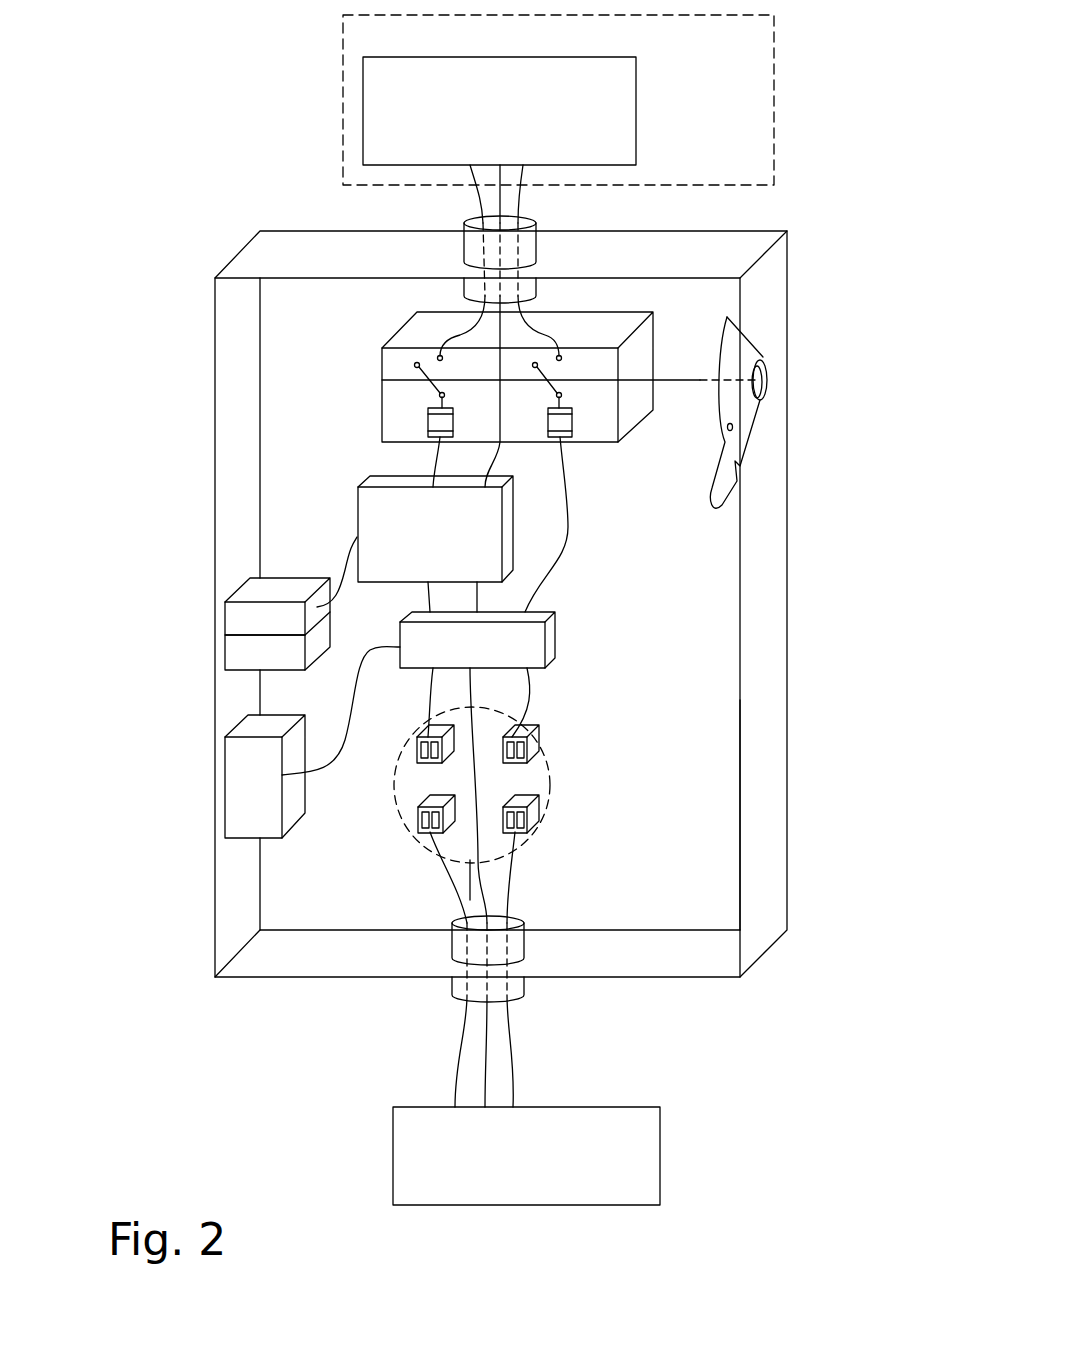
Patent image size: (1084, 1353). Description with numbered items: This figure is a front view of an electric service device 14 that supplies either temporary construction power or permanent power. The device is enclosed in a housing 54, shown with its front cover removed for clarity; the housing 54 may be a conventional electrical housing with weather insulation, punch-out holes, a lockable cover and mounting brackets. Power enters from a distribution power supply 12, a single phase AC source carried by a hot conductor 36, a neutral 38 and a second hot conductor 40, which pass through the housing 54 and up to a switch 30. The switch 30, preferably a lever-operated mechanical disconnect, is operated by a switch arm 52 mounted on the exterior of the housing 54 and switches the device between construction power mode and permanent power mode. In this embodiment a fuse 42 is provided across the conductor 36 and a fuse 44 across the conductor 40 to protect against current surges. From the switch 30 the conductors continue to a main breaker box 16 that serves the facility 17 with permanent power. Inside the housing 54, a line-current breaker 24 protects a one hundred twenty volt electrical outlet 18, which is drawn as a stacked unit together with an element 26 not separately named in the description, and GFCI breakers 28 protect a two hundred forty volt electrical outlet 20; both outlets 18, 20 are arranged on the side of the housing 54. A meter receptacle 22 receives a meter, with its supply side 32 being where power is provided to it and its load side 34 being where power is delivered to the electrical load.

The distribution power supply 12 is at (660, 1173).
The electric service device 14 is at (845, 332).
The main breaker box 16 is at (636, 130).
The facility 17 is at (343, 42).
The electrical outlet 18 is at (240, 617).
The electrical outlet 20 is at (292, 818).
The meter receptacle 22 is at (550, 798).
The line-current breaker 24 is at (378, 521).
The memory unit 26 is at (240, 655).
The GFCI breakers 28 is at (530, 643).
The switch 30 is at (382, 373).
The supply side 32 is at (537, 864).
The load side 34 is at (538, 709).
The conductor 36 is at (522, 200).
The neutral 38 is at (497, 176).
The conductor 40 is at (470, 199).
The fuse 42 is at (563, 420).
The fuse 44 is at (430, 422).
The switch arm 52 is at (747, 417).
The housing 54 is at (740, 837).